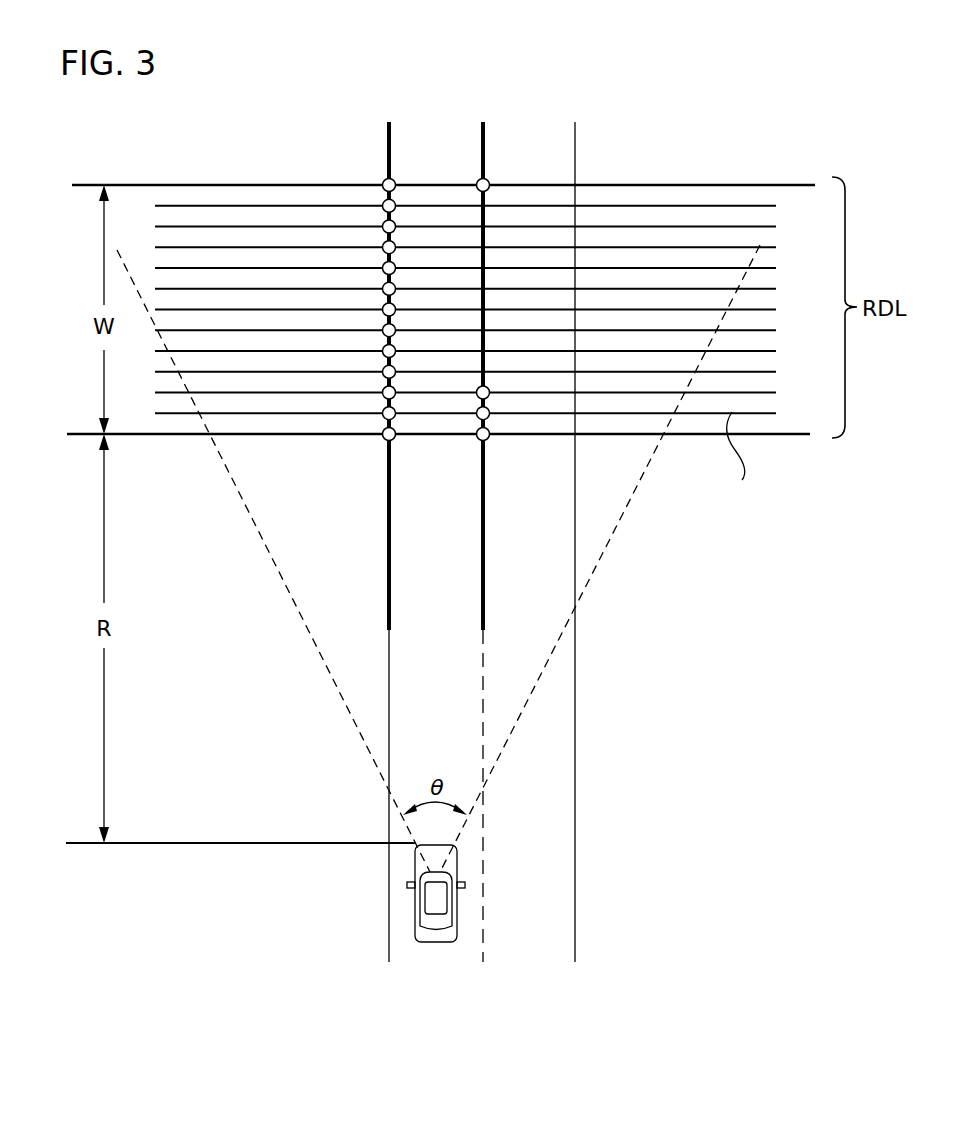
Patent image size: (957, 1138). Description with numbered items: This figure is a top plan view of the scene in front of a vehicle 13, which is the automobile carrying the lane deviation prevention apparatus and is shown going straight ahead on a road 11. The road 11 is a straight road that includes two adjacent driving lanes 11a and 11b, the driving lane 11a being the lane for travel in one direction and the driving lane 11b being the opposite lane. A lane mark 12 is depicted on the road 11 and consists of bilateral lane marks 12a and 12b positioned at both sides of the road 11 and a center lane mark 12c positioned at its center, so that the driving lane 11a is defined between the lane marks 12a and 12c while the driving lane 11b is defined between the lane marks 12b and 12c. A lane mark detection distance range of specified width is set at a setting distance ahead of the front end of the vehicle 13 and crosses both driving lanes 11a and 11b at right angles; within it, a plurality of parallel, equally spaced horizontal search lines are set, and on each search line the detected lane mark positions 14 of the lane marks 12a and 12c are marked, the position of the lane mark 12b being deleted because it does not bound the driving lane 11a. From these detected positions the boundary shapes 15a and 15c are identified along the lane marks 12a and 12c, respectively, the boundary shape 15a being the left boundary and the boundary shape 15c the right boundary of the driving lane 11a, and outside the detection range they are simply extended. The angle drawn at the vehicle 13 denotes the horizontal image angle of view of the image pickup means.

The lane mark positions 14 is at (384, 180).
The boundary shape 15a is at (392, 160).
The boundary shape 15c is at (484, 157).
The driving lane 11a is at (407, 530).
The driving lane 11b is at (553, 517).
The lane mark 12a is at (388, 693).
The lane mark 12b is at (576, 678).
The center lane mark 12c is at (481, 678).
The lane mark 12 is at (576, 883).
The road 11 is at (533, 957).
The vehicle 13 is at (440, 933).